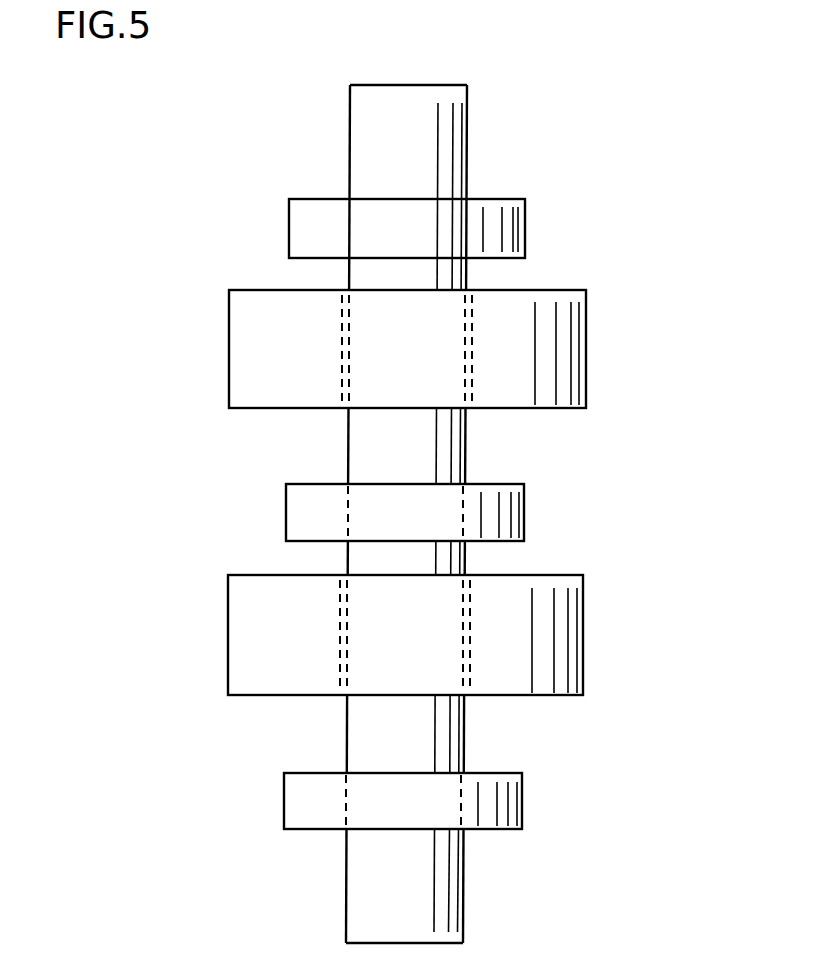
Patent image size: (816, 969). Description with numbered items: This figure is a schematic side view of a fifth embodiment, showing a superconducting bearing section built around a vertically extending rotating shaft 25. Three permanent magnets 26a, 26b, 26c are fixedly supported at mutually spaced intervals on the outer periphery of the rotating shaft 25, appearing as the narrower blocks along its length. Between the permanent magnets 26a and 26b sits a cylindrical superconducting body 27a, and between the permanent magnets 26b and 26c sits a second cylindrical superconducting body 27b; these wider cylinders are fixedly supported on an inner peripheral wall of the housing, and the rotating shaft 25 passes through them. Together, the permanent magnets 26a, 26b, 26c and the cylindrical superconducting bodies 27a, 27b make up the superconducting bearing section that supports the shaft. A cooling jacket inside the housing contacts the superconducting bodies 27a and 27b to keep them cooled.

The rotating shaft 25 is at (450, 155).
The permanent magnet 26a is at (510, 235).
The permanent magnet 26b is at (507, 522).
The permanent magnet 26c is at (488, 827).
The cylindrical superconducting body 27a is at (567, 393).
The cylindrical superconducting body 27b is at (563, 687).